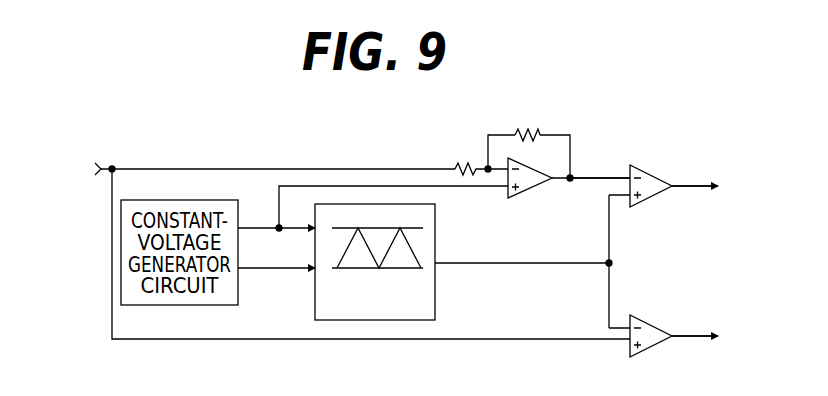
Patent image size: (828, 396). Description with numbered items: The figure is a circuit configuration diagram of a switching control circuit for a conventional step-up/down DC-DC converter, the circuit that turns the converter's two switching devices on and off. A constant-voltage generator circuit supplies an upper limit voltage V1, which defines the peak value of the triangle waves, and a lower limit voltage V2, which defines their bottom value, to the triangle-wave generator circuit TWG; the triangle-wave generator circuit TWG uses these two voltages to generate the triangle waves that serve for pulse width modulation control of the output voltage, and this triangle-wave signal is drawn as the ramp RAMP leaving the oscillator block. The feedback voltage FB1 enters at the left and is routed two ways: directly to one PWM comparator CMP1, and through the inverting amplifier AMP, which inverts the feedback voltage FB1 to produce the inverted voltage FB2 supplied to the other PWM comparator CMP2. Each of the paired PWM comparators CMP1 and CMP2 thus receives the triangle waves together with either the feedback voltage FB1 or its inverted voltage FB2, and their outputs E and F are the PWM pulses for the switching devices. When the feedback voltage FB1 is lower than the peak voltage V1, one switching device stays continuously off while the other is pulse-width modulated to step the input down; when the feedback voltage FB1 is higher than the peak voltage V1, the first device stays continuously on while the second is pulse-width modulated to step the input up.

The feedback voltage FB1 is at (338, 248).
The inverted voltage FB2 is at (600, 165).
The upper limit voltage V1 is at (373, 208).
The lower limit voltage V2 is at (276, 284).
The triangle-wave generator circuit TWG is at (313, 291).
The inverting amplifier AMP is at (478, 149).
The ramp signal RAMP is at (532, 261).
The PWM comparator CMP1 is at (650, 316).
The PWM comparator CMP2 is at (650, 165).
The output signal E is at (704, 192).
The output signal F is at (703, 340).